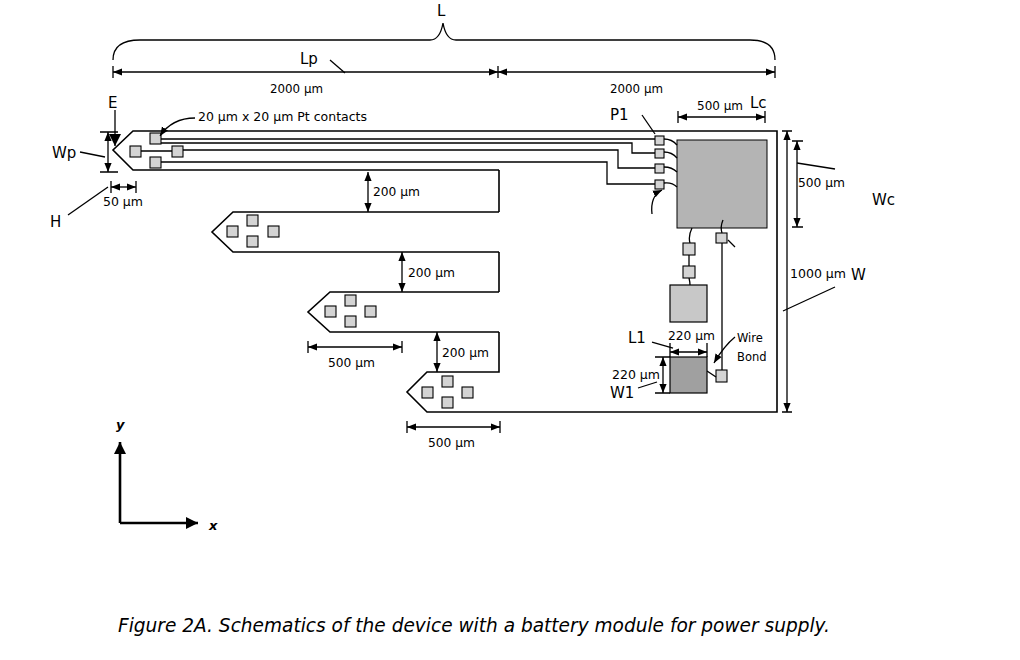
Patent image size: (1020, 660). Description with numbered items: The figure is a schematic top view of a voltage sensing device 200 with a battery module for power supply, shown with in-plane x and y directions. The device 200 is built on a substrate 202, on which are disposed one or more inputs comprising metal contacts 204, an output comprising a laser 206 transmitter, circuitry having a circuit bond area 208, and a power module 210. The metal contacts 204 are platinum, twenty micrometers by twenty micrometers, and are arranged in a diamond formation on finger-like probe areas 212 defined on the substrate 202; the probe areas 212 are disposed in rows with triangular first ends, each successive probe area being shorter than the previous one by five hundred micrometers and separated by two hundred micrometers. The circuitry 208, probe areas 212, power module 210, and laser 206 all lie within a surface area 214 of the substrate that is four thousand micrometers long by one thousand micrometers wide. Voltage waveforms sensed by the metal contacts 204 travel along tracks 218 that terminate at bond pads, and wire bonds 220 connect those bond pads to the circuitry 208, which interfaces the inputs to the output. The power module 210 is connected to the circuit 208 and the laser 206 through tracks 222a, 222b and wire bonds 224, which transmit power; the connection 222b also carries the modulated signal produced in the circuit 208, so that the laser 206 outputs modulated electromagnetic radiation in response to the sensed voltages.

The voltage sensing device 200 is at (507, 317).
The substrate 202 is at (592, 271).
The metal contacts 204 is at (306, 138).
The laser transmitter 206 is at (680, 375).
The circuit bond area 208 is at (722, 184).
The power module 210 is at (682, 307).
The probe areas 212 is at (355, 232).
The surface area 214 is at (432, 290).
The tracks 218 is at (512, 160).
The wire bonds 220 is at (609, 184).
The track 222a is at (683, 255).
The connection 222b is at (748, 285).
The wire bonds 224 is at (723, 221).